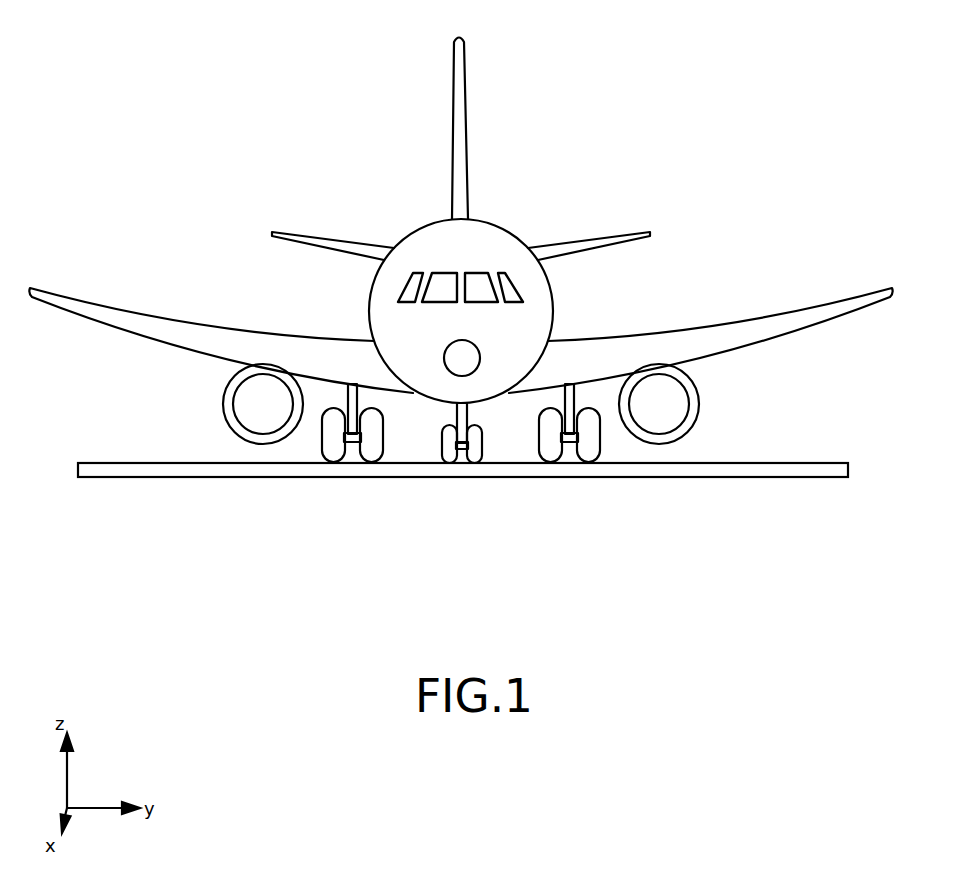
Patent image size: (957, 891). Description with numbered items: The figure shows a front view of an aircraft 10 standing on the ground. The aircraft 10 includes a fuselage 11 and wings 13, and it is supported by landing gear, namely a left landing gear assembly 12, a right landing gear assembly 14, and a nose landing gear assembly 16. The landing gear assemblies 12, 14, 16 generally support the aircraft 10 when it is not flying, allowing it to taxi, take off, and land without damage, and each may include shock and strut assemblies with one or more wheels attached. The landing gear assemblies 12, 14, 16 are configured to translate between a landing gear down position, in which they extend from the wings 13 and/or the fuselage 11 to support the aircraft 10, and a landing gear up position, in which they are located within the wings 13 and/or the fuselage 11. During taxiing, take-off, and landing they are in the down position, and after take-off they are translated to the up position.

The aircraft 10 is at (460, 272).
The fuselage 11 is at (490, 240).
The left landing gear assembly 12 is at (612, 445).
The wings 13 is at (170, 337).
The right landing gear assembly 14 is at (310, 445).
The nose landing gear assembly 16 is at (487, 427).